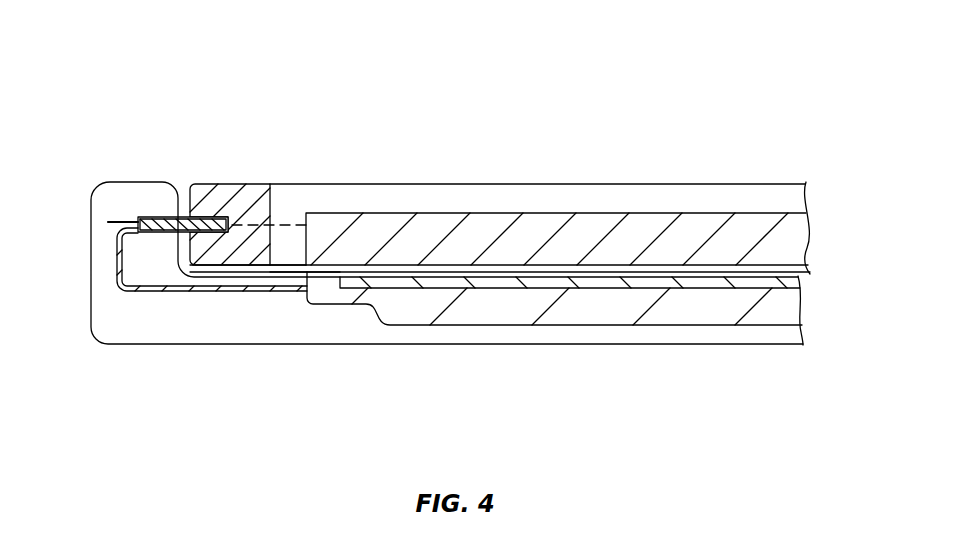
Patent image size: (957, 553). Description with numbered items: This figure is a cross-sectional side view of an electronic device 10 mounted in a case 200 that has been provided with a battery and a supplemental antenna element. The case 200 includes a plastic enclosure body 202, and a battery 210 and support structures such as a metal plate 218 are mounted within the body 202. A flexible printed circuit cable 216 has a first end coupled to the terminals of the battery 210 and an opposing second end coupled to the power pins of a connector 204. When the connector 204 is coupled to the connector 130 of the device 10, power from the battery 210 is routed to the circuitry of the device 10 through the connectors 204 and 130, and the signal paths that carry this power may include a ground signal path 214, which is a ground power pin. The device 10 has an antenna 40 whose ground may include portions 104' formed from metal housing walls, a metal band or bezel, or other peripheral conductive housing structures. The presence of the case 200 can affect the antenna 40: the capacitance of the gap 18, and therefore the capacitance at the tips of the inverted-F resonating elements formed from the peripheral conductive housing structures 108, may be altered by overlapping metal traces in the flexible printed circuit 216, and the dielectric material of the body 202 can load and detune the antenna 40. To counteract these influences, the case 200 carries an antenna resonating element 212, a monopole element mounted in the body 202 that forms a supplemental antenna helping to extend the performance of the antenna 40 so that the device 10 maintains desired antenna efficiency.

The electronic device 10 is at (688, 99).
The antenna 40 is at (421, 73).
The gap 18 is at (288, 207).
The antenna ground portion 104' is at (500, 203).
The peripheral conductive housing structures 108 is at (250, 185).
The connector 130 is at (215, 236).
The case 200 is at (215, 408).
The plastic enclosure body 202 is at (657, 333).
The connector 204 is at (208, 216).
The battery 210 is at (583, 318).
The antenna resonating element 212 is at (124, 219).
The ground signal path 214 is at (287, 229).
The flexible printed circuit cable 216 is at (152, 291).
The metal plate 218 is at (772, 270).